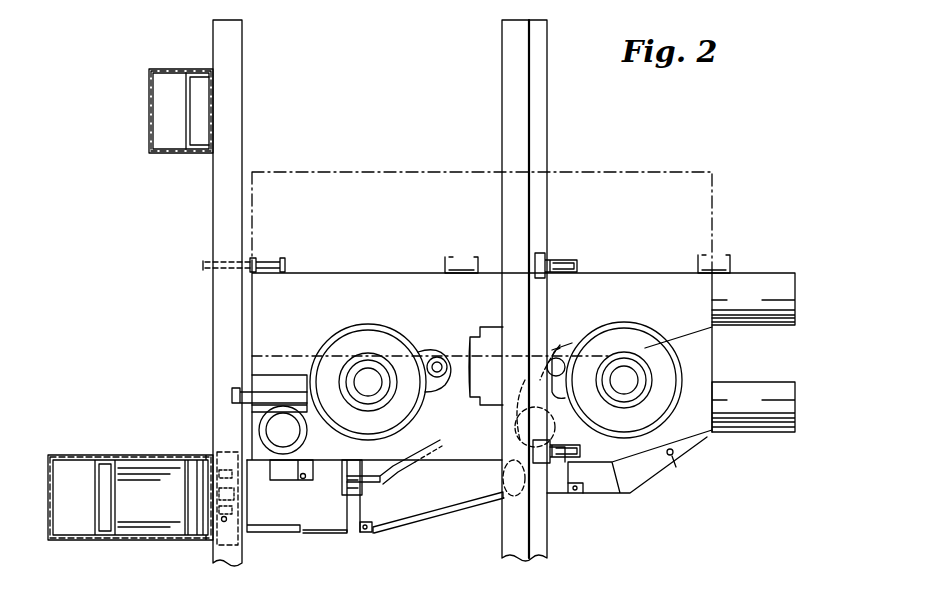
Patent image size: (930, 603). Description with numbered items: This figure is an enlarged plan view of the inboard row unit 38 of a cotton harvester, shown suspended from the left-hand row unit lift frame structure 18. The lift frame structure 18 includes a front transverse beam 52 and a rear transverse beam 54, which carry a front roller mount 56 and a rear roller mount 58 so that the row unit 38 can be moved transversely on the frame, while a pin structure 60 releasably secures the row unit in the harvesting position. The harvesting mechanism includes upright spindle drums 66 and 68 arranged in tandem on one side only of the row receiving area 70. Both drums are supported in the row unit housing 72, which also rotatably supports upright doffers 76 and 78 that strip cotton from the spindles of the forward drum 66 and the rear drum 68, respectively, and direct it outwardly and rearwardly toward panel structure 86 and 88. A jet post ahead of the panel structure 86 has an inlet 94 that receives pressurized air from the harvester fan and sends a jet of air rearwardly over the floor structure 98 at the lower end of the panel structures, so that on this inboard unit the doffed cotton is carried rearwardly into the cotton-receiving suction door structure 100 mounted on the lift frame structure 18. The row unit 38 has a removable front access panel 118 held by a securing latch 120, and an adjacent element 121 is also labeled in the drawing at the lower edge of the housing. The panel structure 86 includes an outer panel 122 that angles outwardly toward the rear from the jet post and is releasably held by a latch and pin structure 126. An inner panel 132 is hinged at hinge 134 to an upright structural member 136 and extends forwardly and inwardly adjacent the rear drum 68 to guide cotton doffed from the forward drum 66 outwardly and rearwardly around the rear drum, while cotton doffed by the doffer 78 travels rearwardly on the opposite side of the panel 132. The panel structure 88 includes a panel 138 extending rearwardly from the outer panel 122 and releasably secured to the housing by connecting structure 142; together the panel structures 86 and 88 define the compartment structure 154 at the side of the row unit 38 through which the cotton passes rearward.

The left-hand row unit lift frame structure 18 is at (190, 283).
The row unit 38 is at (666, 170).
The front transverse beam 52 is at (514, 58).
The rear transverse beam 54 is at (213, 190).
The front roller mount 56 is at (540, 255).
The rear roller mount 58 is at (232, 395).
The pin structure 60 is at (270, 254).
The spindle drum 66 is at (634, 342).
The spindle drum 68 is at (390, 348).
The row receiving area 70 is at (745, 351).
The row unit housing 72 is at (388, 273).
The doffer 76 is at (525, 377).
The doffer 78 is at (280, 398).
The panel structure 86 is at (436, 530).
The panel structure 88 is at (335, 545).
The inlet 94 is at (503, 479).
The floor structure 98 is at (405, 510).
The suction door structure 100 is at (140, 562).
The front access panel 118 is at (647, 492).
The securing latch 120 is at (678, 458).
The mounting tab 121 is at (576, 495).
The outer panel 122 is at (478, 510).
The pin structure 126 is at (365, 534).
The inner panel 132 is at (388, 466).
The hinge 134 is at (303, 481).
The upright structural member 136 is at (270, 470).
The panel 138 is at (275, 536).
The connecting structure 142 is at (338, 506).
The compartment structure 154 is at (456, 526).